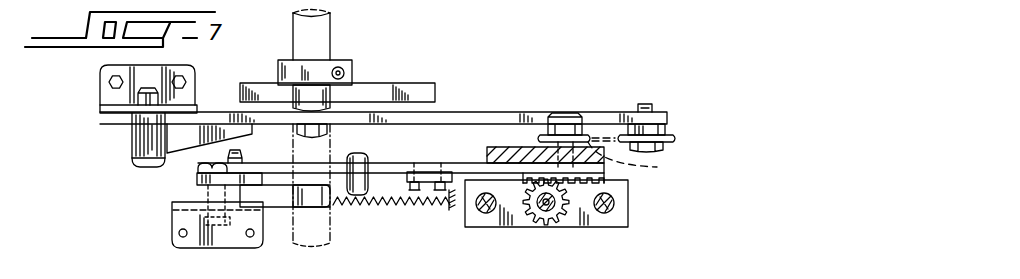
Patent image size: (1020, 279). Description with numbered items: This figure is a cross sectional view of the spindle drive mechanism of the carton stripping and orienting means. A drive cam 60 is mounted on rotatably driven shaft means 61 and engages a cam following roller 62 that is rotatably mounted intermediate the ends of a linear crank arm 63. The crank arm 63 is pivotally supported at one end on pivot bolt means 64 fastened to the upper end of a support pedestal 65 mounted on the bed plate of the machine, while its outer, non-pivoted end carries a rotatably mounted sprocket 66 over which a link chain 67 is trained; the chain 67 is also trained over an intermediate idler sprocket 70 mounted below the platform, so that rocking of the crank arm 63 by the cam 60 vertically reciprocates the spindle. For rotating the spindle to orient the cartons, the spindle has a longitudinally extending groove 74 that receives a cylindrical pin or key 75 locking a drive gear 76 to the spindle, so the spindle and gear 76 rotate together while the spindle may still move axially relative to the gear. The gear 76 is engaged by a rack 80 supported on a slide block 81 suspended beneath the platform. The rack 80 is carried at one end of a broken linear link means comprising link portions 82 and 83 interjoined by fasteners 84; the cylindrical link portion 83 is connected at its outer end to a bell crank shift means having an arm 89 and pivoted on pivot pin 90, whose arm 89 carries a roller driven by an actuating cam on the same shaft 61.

The drive cam 60 is at (442, 90).
The rotatably driven shaft means 61 is at (323, 43).
The cam following roller 62 is at (327, 97).
The linear crank arm 63 is at (507, 112).
The pivot bolt means 64 is at (133, 165).
The support pedestal 65 is at (107, 95).
The sprocket 66 is at (670, 138).
The link chain 67 is at (639, 159).
The intermediate idler sprocket 70 is at (620, 93).
The longitudinally extending groove 74 is at (542, 212).
The cylindrical pin or key 75 is at (538, 205).
The drive gear 76 is at (563, 220).
The rack 80 is at (604, 181).
The slide block 81 is at (487, 150).
The link portion 82 is at (423, 163).
The link portion 83 is at (375, 143).
The fasteners 84 is at (437, 192).
The bell crank arm 89 is at (283, 207).
The pivot pin 90 is at (197, 170).